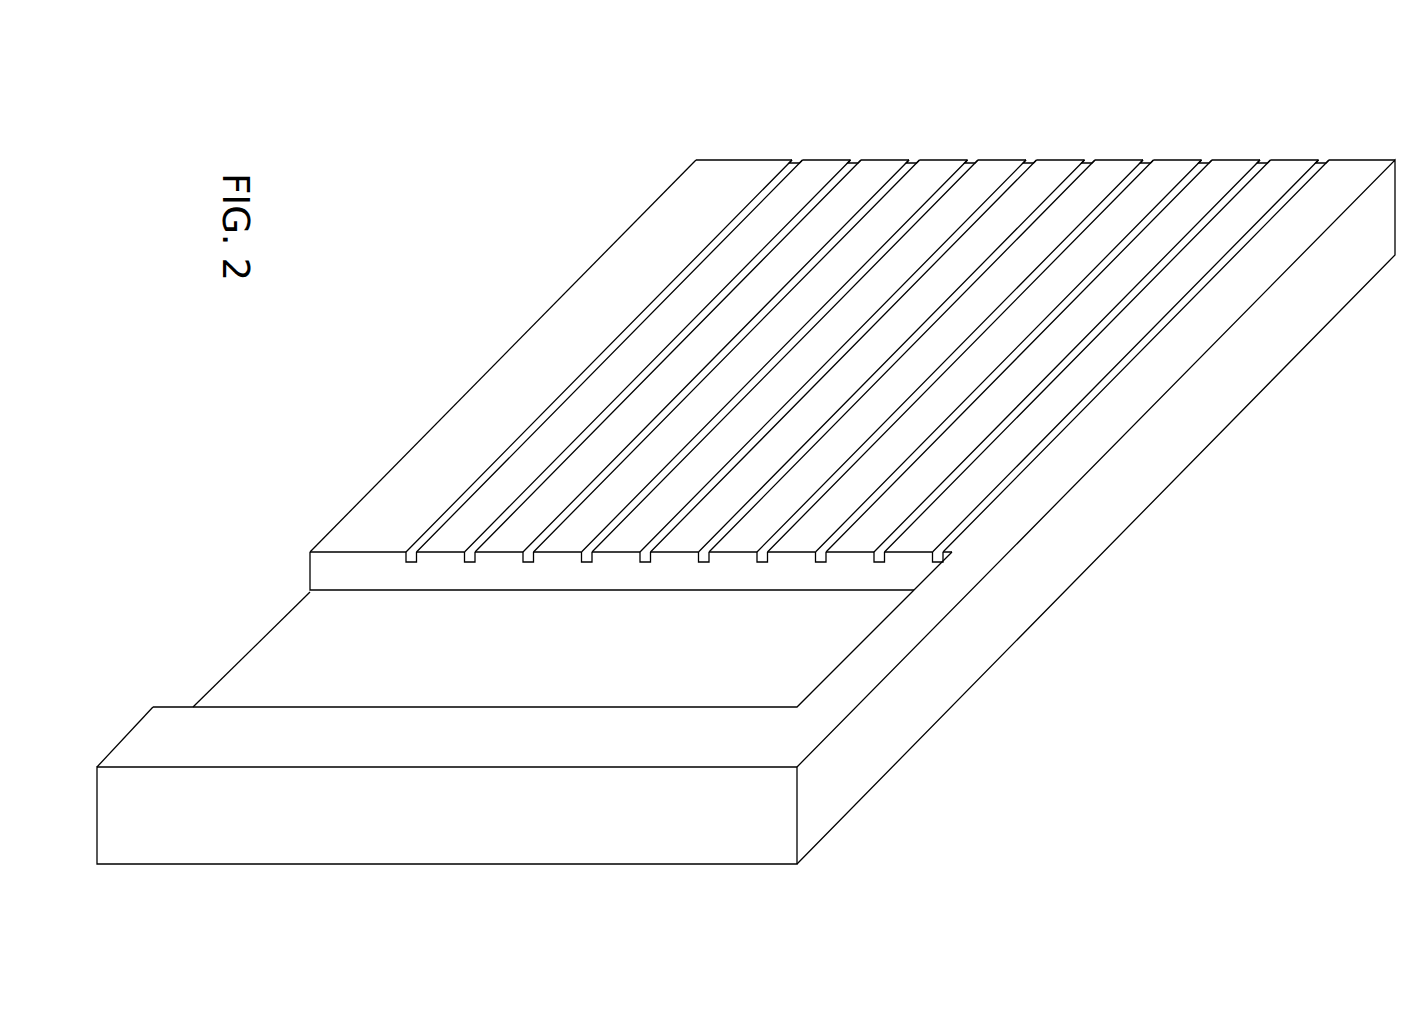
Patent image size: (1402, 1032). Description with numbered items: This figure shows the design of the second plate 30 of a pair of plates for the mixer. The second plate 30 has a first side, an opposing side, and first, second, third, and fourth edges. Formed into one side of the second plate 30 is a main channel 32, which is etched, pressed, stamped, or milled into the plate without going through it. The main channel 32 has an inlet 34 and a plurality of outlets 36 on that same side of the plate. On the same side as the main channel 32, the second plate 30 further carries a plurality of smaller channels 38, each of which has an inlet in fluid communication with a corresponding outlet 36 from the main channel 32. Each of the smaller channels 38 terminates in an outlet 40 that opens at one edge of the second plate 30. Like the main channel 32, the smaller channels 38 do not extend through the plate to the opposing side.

The second plate 30 is at (734, 160).
The main channel 32 is at (775, 664).
The inlet 34 is at (175, 690).
The outlets 36 is at (530, 553).
The smaller channels 38 is at (923, 517).
The outlet 40 is at (1145, 160).